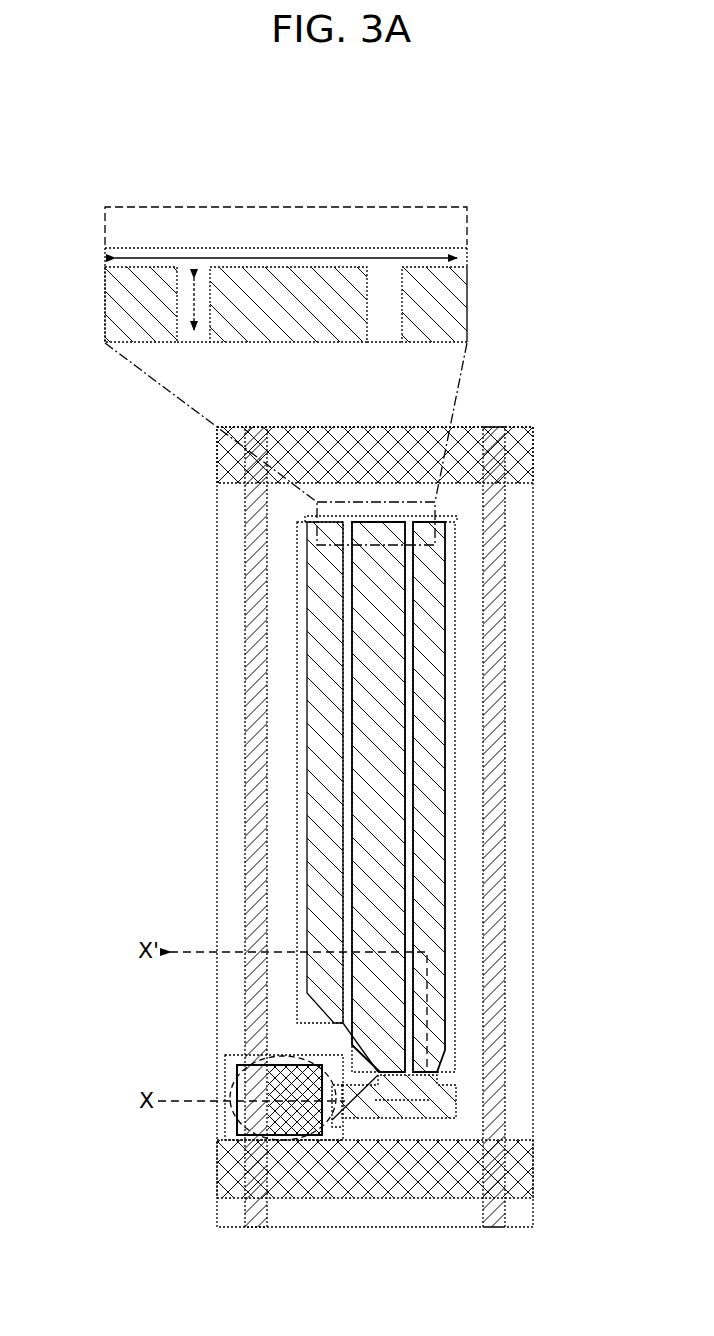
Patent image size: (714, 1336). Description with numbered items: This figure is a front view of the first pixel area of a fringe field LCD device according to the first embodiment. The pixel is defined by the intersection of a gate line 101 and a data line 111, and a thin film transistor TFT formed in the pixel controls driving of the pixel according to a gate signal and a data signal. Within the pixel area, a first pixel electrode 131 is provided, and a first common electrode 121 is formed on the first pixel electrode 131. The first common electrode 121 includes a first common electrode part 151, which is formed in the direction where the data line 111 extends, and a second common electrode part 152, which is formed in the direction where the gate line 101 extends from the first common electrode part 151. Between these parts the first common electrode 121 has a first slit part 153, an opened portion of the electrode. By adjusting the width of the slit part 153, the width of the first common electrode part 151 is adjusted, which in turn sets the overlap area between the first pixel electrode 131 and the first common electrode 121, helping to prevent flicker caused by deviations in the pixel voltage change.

The gate line 101 is at (227, 1168).
The data line 111 is at (257, 827).
The first common electrode 121 is at (347, 717).
The first pixel electrode 131 is at (327, 625).
The first common electrode part 151 is at (178, 295).
The second common electrode part 152 is at (328, 257).
The first slit part 153 is at (282, 310).
The thin film transistor TFT is at (300, 1142).